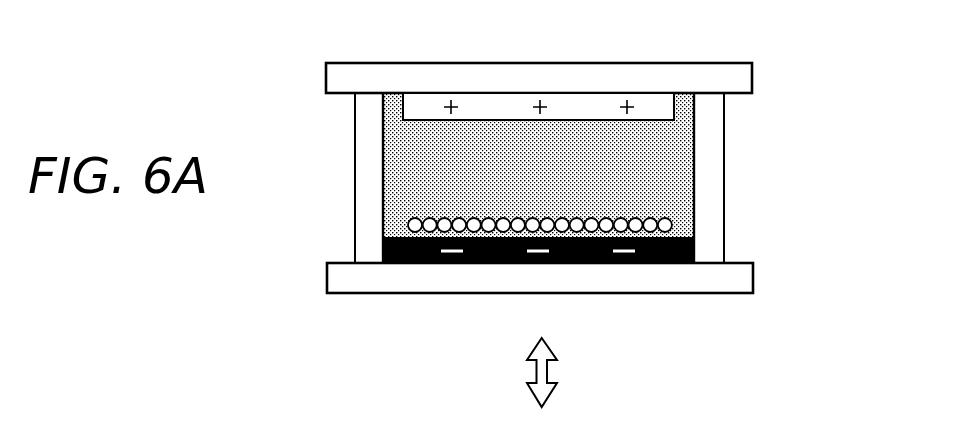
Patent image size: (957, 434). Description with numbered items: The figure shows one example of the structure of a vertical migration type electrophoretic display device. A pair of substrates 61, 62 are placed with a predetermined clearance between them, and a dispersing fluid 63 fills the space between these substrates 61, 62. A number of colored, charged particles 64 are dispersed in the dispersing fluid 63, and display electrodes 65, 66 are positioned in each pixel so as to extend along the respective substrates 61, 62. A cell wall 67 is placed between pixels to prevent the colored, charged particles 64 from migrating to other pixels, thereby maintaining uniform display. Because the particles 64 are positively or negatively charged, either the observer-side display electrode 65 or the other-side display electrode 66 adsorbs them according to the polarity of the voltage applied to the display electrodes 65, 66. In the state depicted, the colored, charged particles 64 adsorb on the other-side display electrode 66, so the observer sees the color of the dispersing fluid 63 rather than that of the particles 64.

The substrate 61 is at (713, 63).
The substrate 62 is at (735, 273).
The dispersing fluid 63 is at (665, 155).
The colored, charged particles 64 is at (668, 222).
The display electrode 65 is at (594, 100).
The display electrode 66 is at (596, 253).
The cell wall 67 is at (372, 176).